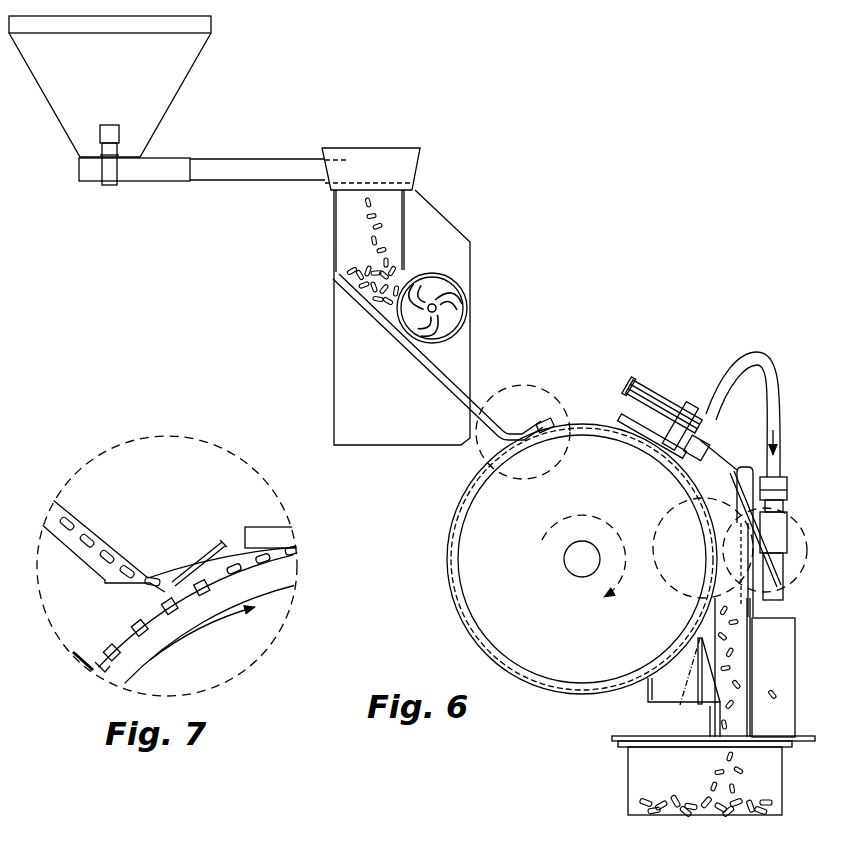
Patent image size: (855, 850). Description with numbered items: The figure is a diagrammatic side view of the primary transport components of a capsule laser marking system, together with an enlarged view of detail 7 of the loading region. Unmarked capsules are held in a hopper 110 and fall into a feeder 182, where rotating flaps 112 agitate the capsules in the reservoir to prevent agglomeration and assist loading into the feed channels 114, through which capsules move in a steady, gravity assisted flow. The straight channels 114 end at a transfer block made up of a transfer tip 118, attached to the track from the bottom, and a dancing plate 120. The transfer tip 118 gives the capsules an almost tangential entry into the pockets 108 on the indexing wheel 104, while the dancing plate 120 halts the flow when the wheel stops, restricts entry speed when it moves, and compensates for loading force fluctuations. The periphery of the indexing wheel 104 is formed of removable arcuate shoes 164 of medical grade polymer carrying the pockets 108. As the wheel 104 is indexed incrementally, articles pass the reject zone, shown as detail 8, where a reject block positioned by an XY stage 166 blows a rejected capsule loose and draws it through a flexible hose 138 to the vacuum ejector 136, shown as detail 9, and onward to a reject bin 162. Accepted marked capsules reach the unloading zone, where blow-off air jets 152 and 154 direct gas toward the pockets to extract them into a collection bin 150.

In FIG. 6, the hopper 110 is at (128, 82).
In FIG. 6, the rotating flaps 112 is at (483, 275).
In FIG. 6, the indexing wheel 104 is at (570, 640).
In FIG. 7, the indexing wheel 104 is at (231, 668).
In FIG. 6, the detail 7 is at (530, 387).
In FIG. 6, the detail 8 is at (662, 466).
In FIG. 6, the detail 9 is at (806, 552).
In FIG. 6, the XY stage 166 is at (699, 360).
In FIG. 6, the flexible hose 138 is at (783, 427).
In FIG. 6, the vacuum ejector 136 is at (790, 527).
In FIG. 6, the blow-off air jet 152 is at (710, 555).
In FIG. 6, the reject bin 162 is at (790, 672).
In FIG. 6, the collection bin 150 is at (688, 778).
In FIG. 6, the blow-off air jet 154 is at (696, 690).
In FIG. 6, the feeder 182 is at (607, 143).
In FIG. 7, the feed channels 114 is at (118, 533).
In FIG. 7, the dancing plate 120 is at (193, 553).
In FIG. 7, the transfer tip 118 is at (145, 590).
In FIG. 7, the pocket 108 is at (76, 655).
In FIG. 7, the arcuate shoe 164 is at (106, 668).